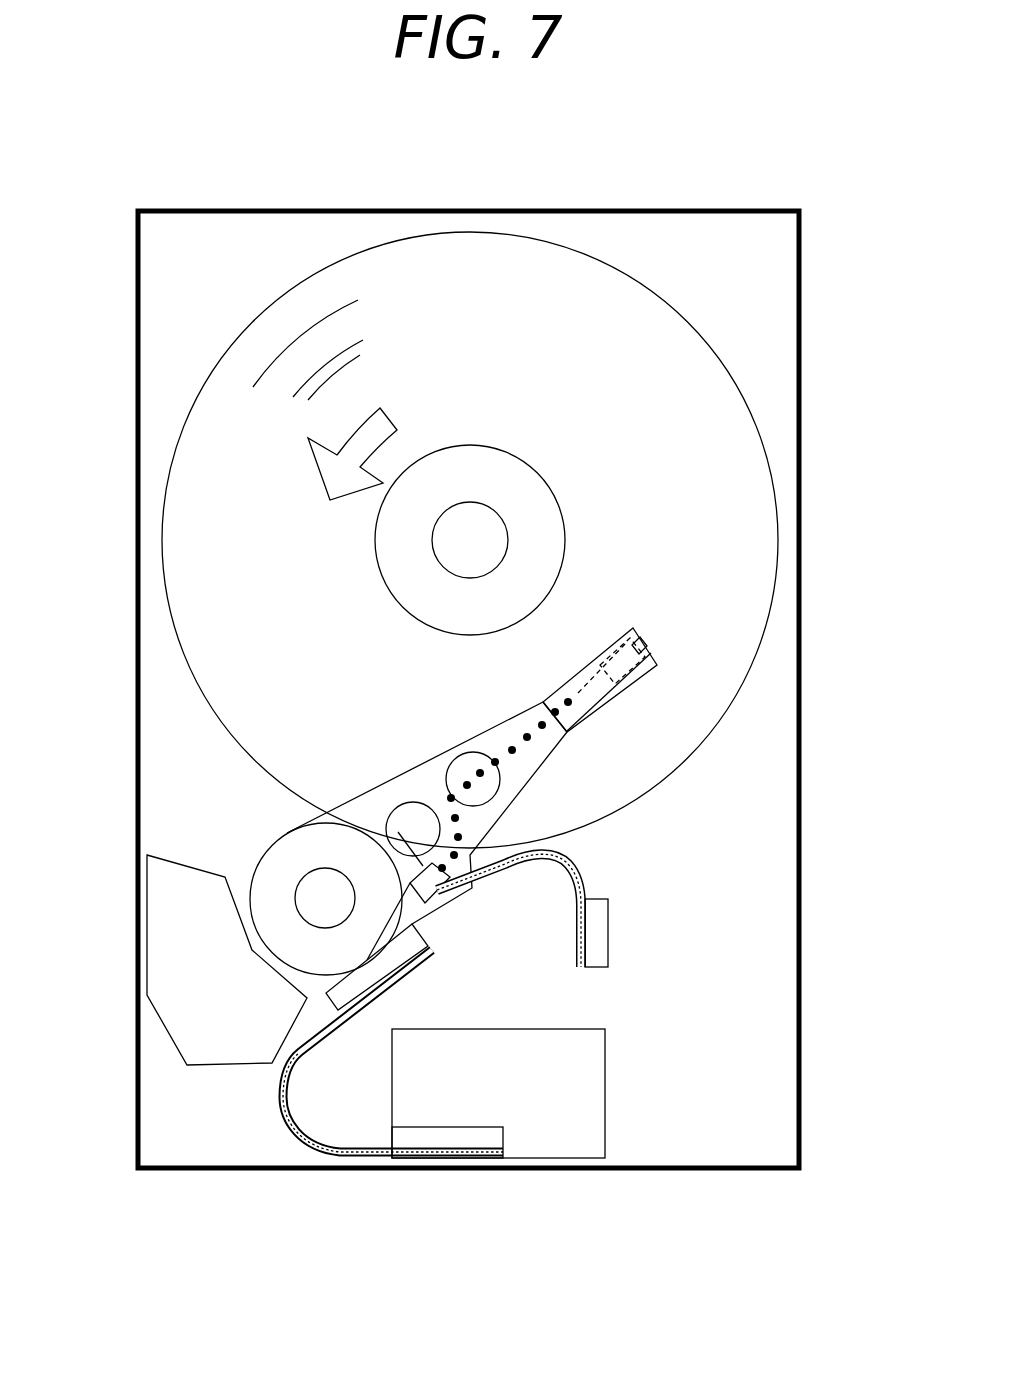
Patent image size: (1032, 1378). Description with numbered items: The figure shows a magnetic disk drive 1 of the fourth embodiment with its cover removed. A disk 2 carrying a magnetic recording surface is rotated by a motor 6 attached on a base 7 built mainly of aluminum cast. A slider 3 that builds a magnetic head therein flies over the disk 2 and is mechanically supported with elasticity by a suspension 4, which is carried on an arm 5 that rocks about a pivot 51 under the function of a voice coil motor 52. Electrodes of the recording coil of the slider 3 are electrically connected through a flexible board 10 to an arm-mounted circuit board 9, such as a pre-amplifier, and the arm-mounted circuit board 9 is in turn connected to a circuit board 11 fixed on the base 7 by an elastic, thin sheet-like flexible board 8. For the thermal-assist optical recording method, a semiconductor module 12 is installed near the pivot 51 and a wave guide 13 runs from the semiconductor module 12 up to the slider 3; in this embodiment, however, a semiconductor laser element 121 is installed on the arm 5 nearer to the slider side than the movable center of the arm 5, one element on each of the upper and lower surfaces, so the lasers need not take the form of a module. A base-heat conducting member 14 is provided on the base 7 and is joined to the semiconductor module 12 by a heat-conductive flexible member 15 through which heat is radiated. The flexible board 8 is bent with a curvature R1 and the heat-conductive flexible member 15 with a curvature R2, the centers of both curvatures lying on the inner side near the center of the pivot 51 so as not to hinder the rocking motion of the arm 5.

The magnetic disk drive 1 is at (620, 200).
The disk 2 is at (680, 345).
The slider 3 is at (648, 645).
The suspension 4 is at (598, 690).
The arm 5 is at (383, 780).
The motor 6 is at (530, 478).
The base 7 is at (245, 248).
The flexible board 8 is at (287, 1098).
The arm-mounted circuit board 9 is at (415, 982).
The flexible board 10 is at (570, 743).
The circuit board 11 is at (542, 1078).
The semiconductor module 12 is at (362, 967).
The semiconductor laser element 121 is at (390, 858).
The wave guide 13 is at (450, 798).
The base-heat conducting member 14 is at (608, 940).
The heat-conductive flexible member 15 is at (573, 870).
The pivot 51 is at (320, 880).
The voice coil motor 52 is at (178, 925).
The curvature R1 is at (296, 1110).
The curvature R2 is at (552, 867).